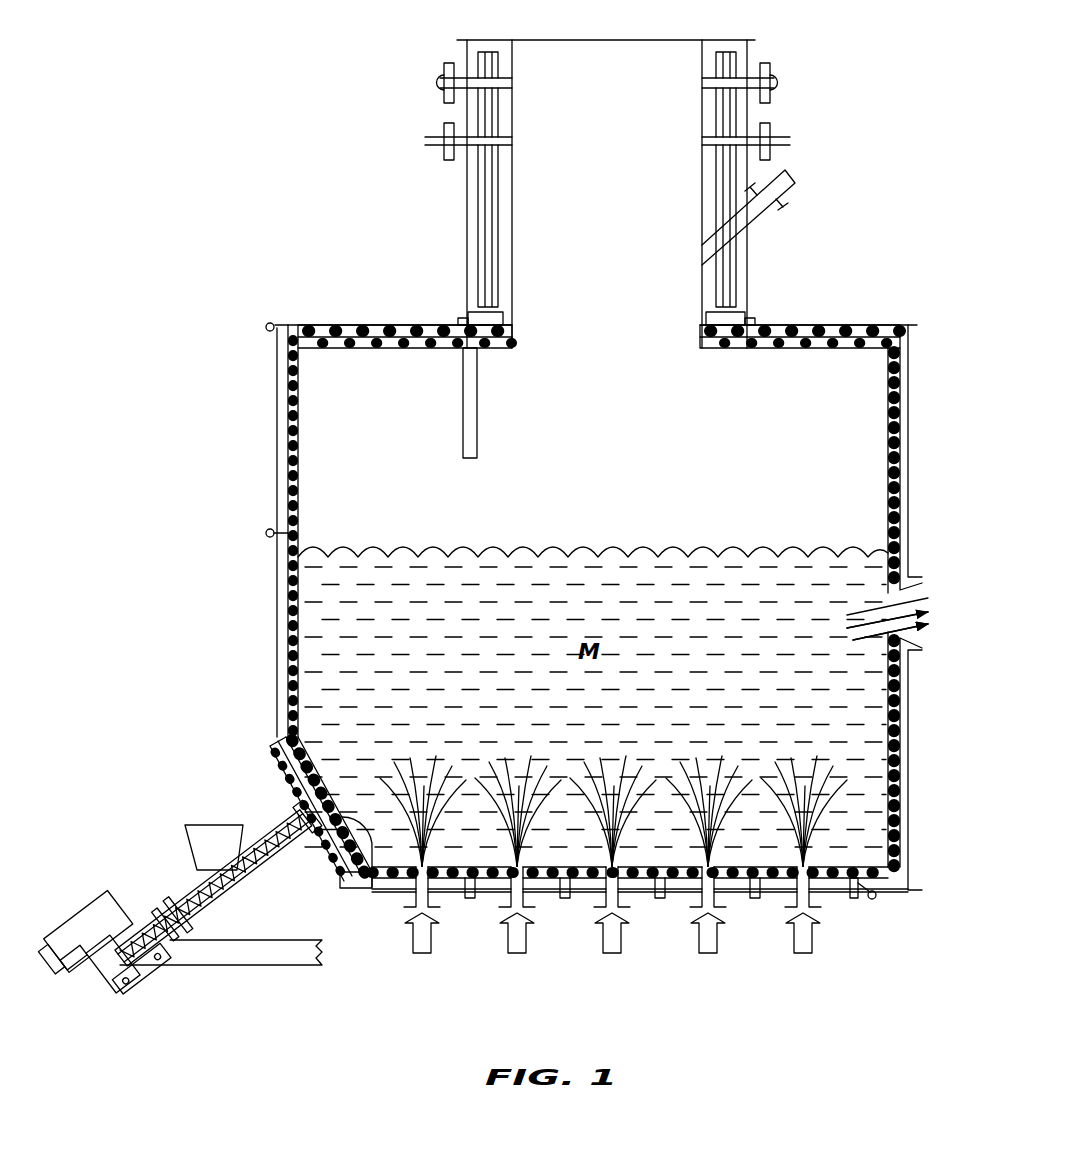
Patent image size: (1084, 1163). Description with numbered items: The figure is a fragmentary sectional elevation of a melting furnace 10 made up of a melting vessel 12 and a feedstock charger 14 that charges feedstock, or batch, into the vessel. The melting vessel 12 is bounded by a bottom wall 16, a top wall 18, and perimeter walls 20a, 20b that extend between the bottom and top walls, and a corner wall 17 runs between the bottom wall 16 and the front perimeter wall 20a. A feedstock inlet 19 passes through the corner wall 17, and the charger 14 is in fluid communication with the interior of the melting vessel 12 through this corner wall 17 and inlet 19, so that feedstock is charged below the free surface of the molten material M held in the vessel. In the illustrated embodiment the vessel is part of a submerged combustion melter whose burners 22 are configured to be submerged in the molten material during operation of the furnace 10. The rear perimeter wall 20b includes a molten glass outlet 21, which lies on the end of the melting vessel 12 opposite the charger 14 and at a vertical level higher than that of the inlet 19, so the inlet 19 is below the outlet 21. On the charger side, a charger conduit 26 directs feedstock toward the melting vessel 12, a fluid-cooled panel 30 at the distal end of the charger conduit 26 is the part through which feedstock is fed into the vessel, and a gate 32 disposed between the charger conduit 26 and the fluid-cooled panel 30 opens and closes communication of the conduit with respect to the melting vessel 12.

The melting furnace 10 is at (190, 95).
The melting vessel 12 is at (262, 327).
The feedstock charger 14 is at (178, 882).
The bottom wall 16 is at (566, 897).
The corner wall 17 is at (270, 777).
The top wall 18 is at (373, 322).
The feedstock inlet 19 is at (373, 890).
The front perimeter wall 20a is at (268, 594).
The rear perimeter wall 20b is at (918, 500).
The molten glass outlet 21 is at (930, 582).
The burners 22 is at (509, 894).
The charger conduit 26 is at (268, 885).
The fluid-cooled panel 30 is at (268, 750).
The gate 32 is at (282, 808).